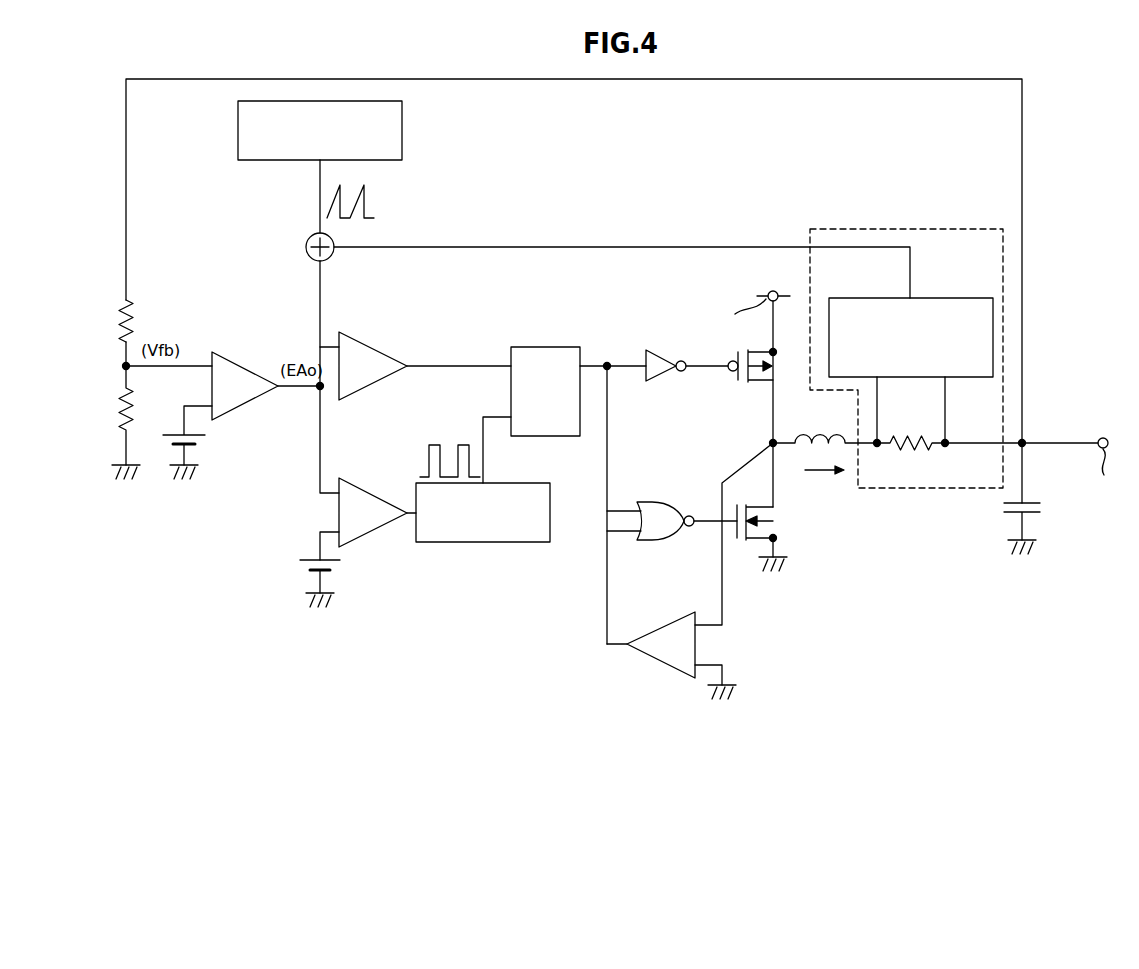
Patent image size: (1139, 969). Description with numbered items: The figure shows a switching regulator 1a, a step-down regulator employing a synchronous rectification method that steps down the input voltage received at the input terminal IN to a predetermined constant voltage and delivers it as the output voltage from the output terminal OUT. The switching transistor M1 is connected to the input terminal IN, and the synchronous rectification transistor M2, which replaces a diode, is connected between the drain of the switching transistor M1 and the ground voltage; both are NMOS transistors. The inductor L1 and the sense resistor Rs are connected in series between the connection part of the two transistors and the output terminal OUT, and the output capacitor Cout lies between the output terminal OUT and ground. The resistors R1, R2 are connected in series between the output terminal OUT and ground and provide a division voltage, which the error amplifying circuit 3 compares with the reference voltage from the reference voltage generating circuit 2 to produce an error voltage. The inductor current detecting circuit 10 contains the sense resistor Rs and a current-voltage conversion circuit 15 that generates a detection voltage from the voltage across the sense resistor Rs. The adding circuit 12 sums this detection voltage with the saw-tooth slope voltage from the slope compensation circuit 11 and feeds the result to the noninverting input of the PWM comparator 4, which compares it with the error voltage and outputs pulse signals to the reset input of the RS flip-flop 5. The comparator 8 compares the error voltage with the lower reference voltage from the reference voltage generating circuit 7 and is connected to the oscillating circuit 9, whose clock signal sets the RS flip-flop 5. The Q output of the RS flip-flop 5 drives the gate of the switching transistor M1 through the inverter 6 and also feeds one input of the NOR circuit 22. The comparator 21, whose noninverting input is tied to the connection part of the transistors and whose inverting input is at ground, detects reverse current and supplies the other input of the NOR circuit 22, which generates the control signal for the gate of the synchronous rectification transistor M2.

The switching regulator 1a is at (842, 57).
The reference voltage generating circuit 2 is at (203, 442).
The error amplifying circuit 3 is at (246, 363).
The PWM comparator 4 is at (375, 343).
The RS flip-flop 5 is at (549, 346).
The inverter 6 is at (661, 352).
The reference voltage generating circuit 7 is at (339, 567).
The comparator 8 is at (374, 478).
The oscillating circuit 9 is at (479, 545).
The inductor current detecting circuit 10 is at (953, 222).
The slope compensation circuit 11 is at (402, 130).
The adding circuit 12 is at (305, 248).
The current-voltage conversion circuit 15 is at (951, 297).
The comparator 21 is at (660, 668).
The NOR circuit 22 is at (656, 500).
The resistor R1 is at (109, 321).
The resistor R2 is at (116, 423).
The switching transistor M1 is at (752, 372).
The synchronous rectification transistor M2 is at (765, 518).
The inductor L1 is at (825, 449).
The sense resistor Rs is at (986, 458).
The output capacitor Cout is at (1042, 539).
The input terminal IN is at (754, 297).
The output terminal OUT is at (1069, 458).